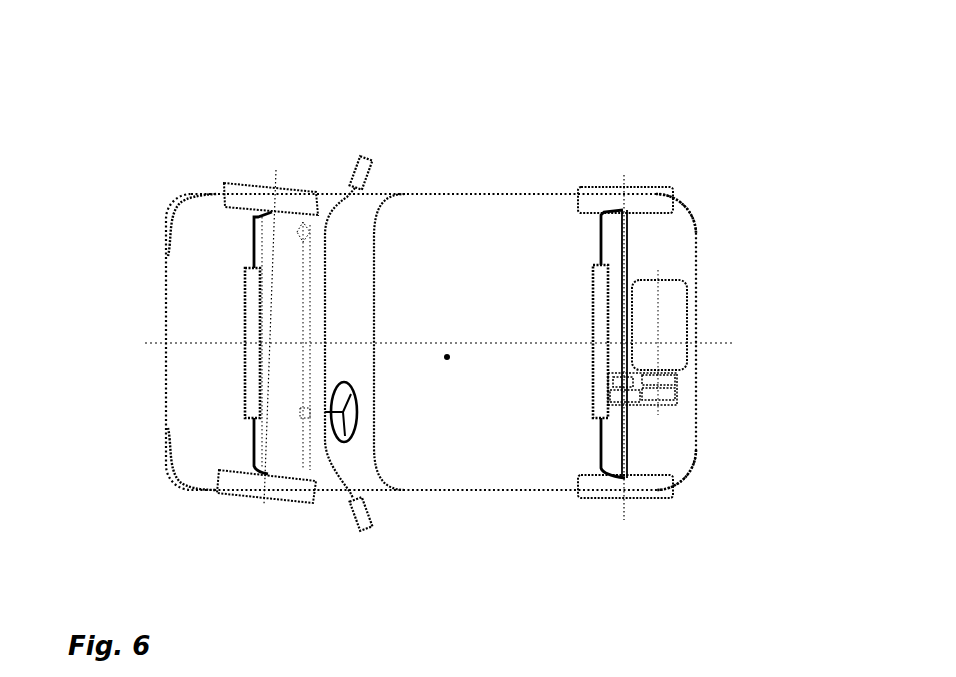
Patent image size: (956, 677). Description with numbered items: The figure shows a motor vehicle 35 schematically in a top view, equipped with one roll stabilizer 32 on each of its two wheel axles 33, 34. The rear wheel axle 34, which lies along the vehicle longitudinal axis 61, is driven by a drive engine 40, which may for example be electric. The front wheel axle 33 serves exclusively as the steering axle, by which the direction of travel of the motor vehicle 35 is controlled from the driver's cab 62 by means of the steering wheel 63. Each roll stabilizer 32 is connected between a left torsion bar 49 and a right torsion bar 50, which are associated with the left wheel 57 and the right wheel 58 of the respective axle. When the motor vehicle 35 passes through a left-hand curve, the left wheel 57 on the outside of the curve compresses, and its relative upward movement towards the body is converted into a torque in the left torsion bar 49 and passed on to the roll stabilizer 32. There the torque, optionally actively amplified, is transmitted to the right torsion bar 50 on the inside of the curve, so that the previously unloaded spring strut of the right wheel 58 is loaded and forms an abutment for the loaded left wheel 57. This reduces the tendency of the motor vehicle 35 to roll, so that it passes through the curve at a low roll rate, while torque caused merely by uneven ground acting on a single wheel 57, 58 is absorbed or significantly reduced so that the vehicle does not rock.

The motor vehicle 35 is at (760, 80).
The front wheel axle 33 is at (286, 158).
The rear wheel axle 34 is at (616, 510).
The driver's cab 62 is at (447, 355).
The right wheel 58 is at (225, 185).
The left wheel 57 is at (297, 495).
The right torsion bar 50 is at (252, 252).
The left torsion bar 49 is at (250, 442).
The roll stabilizer 32 is at (243, 298).
The drive engine 40 is at (680, 318).
The vehicle longitudinal axis 61 is at (712, 346).
The steering wheel 63 is at (350, 507).